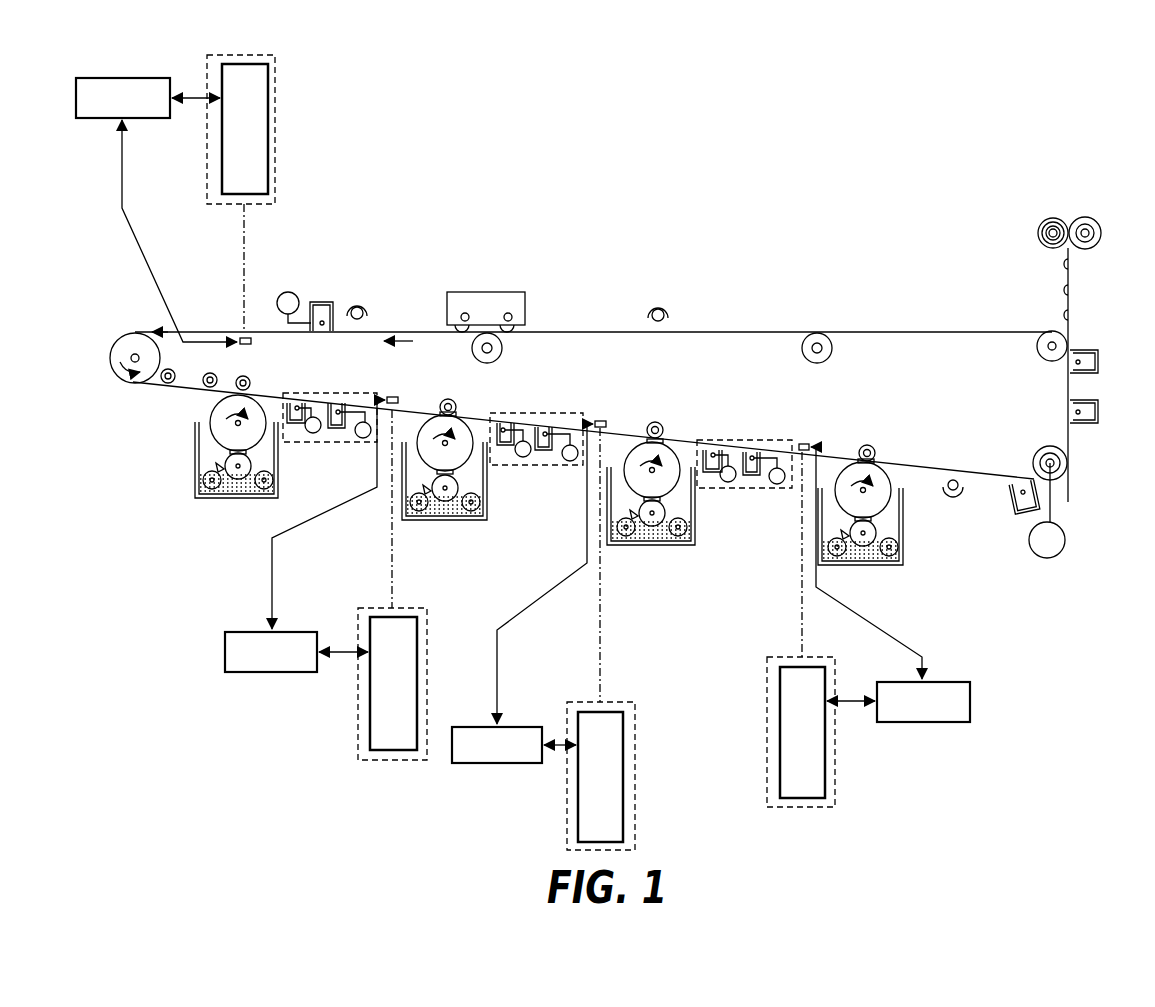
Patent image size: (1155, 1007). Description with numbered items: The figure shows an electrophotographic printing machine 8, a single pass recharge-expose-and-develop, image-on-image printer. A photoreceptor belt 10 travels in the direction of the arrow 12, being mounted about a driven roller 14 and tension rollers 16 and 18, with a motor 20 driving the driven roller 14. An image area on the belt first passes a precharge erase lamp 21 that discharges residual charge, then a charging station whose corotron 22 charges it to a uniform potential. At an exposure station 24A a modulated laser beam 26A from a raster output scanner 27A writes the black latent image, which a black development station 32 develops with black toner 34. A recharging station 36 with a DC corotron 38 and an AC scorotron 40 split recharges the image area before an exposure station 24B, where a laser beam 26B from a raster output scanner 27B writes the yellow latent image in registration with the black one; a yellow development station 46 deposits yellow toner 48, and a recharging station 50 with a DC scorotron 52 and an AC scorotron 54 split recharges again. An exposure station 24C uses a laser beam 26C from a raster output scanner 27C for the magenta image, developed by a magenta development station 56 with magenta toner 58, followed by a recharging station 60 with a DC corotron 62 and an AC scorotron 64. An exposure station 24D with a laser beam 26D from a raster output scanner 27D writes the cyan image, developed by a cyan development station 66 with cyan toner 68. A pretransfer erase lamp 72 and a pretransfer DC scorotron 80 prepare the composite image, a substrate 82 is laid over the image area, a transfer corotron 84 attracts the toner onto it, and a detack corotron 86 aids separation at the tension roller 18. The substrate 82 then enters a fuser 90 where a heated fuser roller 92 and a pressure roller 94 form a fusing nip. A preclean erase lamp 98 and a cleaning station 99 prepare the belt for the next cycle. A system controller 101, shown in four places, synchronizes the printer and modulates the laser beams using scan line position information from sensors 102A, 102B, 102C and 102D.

The electrophotographic printing machine 8 is at (798, 97).
The photoreceptor belt 10 is at (780, 331).
The direction of belt travel 12 is at (407, 337).
The driven roller 14 is at (1067, 463).
The tension roller 16 is at (128, 345).
The tension roller 18 is at (1046, 336).
The motor 20 is at (1062, 552).
The precharge erase lamp 21 is at (363, 305).
The corotron 22 is at (315, 300).
The exposure station 24A is at (280, 184).
The exposure station 24B is at (416, 585).
The exposure station 24C is at (619, 639).
The exposure station 24D is at (770, 629).
The laser beam 26A is at (247, 252).
The laser beam 26B is at (393, 576).
The laser beam 26C is at (600, 635).
The laser beam 26D is at (801, 606).
The raster output scanner 27A is at (268, 130).
The raster output scanner 27B is at (417, 684).
The raster output scanner 27C is at (625, 776).
The raster output scanner 27D is at (779, 732).
The black development station 32 is at (239, 469).
The black toner 34 is at (228, 498).
The recharging station 36 is at (330, 424).
The DC corotron 38 is at (290, 402).
The AC scorotron 40 is at (336, 432).
The yellow development station 46 is at (447, 482).
The yellow toner 48 is at (433, 520).
The recharging station 50 is at (550, 425).
The DC scorotron 52 is at (498, 422).
The AC scorotron 54 is at (554, 430).
The magenta development station 56 is at (655, 506).
The magenta toner 58 is at (645, 545).
The recharging station 60 is at (757, 450).
The DC corotron 62 is at (705, 449).
The AC scorotron 64 is at (762, 456).
The cyan development station 66 is at (879, 527).
The cyan toner 68 is at (867, 565).
The pretransfer erase lamp 72 is at (955, 497).
The pretransfer DC scorotron 80 is at (1024, 513).
The substrate 82 is at (1070, 488).
The transfer corotron 84 is at (1100, 409).
The detack corotron 86 is at (1097, 355).
The fuser 90 is at (1046, 210).
The heated fuser roller 92 is at (1038, 229).
The pressure roller 94 is at (1101, 233).
The preclean erase lamp 98 is at (655, 306).
The cleaning station 99 is at (474, 293).
The system controller 101 is at (86, 78).
The sensor 102A is at (252, 342).
The sensor 102B is at (392, 397).
The sensor 102C is at (600, 421).
The sensor 102D is at (806, 444).